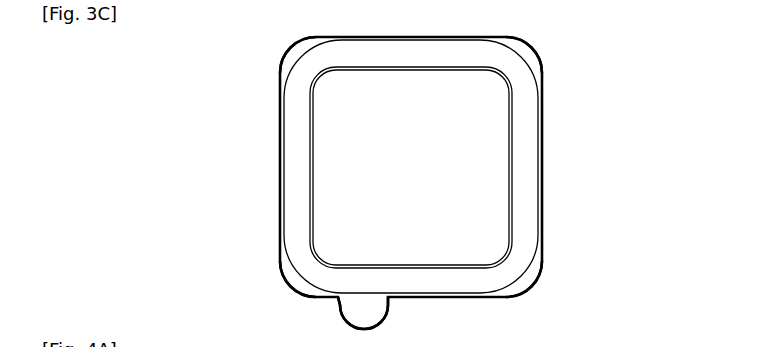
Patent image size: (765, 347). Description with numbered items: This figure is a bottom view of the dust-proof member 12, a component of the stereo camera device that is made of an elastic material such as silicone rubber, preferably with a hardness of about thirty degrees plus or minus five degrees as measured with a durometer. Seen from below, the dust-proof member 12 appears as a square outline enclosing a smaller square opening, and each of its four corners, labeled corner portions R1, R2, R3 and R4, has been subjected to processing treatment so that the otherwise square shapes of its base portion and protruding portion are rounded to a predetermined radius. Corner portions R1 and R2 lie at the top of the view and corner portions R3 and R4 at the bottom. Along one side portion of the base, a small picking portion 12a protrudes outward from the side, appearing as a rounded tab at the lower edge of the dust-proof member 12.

The dust-proof member 12 is at (566, 165).
The picking portion 12a is at (353, 316).
The corner portion R1 is at (553, 48).
The corner portion R2 is at (273, 47).
The corner portion R3 is at (273, 280).
The corner portion R4 is at (555, 282).